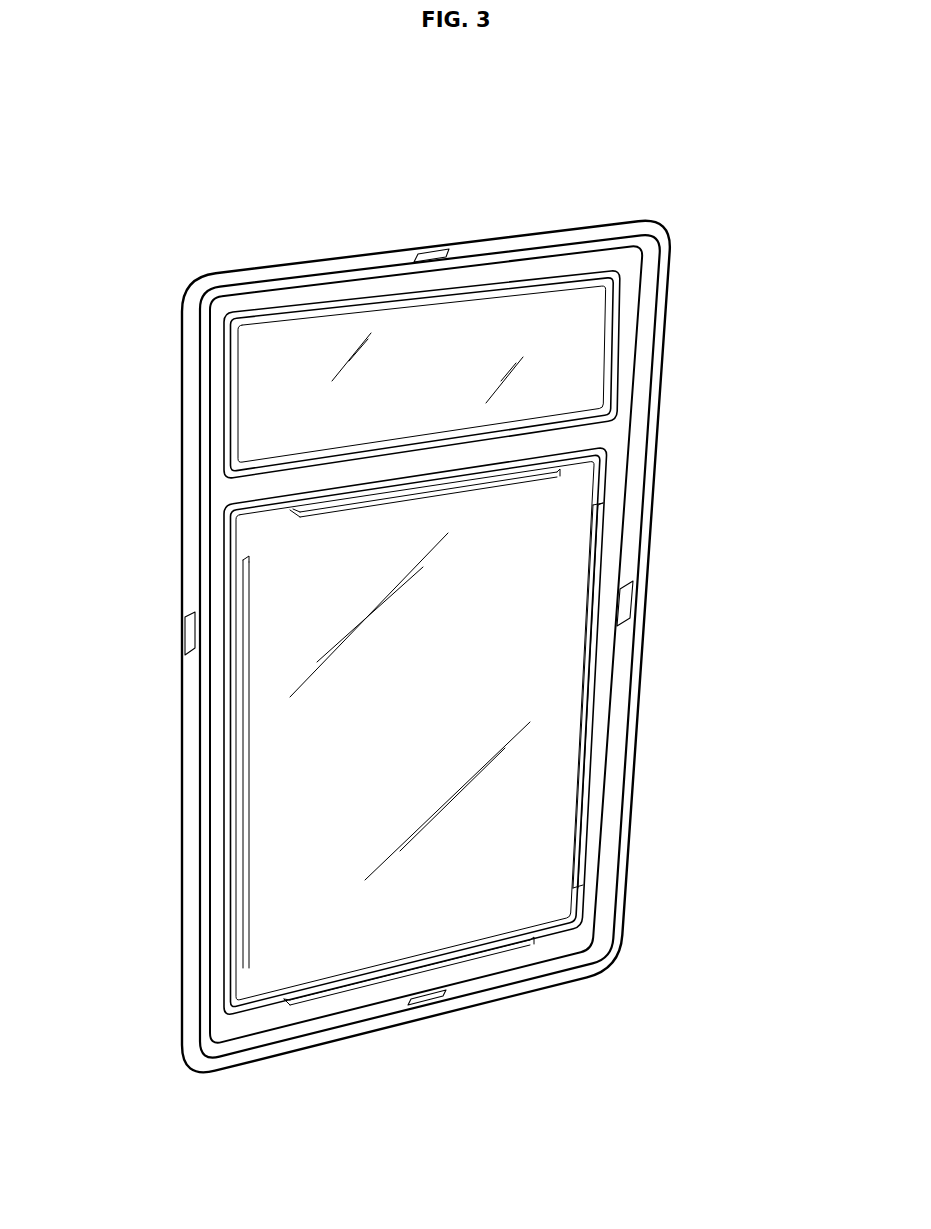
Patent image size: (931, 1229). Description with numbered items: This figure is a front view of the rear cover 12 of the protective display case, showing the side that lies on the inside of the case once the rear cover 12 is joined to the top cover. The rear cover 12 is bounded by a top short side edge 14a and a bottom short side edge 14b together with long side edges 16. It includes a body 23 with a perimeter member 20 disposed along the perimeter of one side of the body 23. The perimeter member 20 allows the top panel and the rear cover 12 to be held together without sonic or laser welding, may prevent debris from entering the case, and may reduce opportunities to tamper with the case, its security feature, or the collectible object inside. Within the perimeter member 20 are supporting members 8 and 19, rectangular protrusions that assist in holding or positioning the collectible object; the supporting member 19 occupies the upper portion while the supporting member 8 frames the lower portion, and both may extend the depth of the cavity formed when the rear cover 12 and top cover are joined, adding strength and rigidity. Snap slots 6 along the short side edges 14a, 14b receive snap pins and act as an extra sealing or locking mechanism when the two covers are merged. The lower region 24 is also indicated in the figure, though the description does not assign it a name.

The rear cover 12 is at (160, 265).
The top short side edge 14a is at (298, 258).
The bottom short side edge 14b is at (518, 993).
The snap slot 6 is at (441, 254).
The body 23 is at (667, 313).
The long side edge 16 is at (190, 522).
The supporting member 19 is at (229, 394).
The perimeter member 20 is at (609, 457).
The lower window cover 24 is at (316, 758).
The supporting member 8 is at (600, 655).